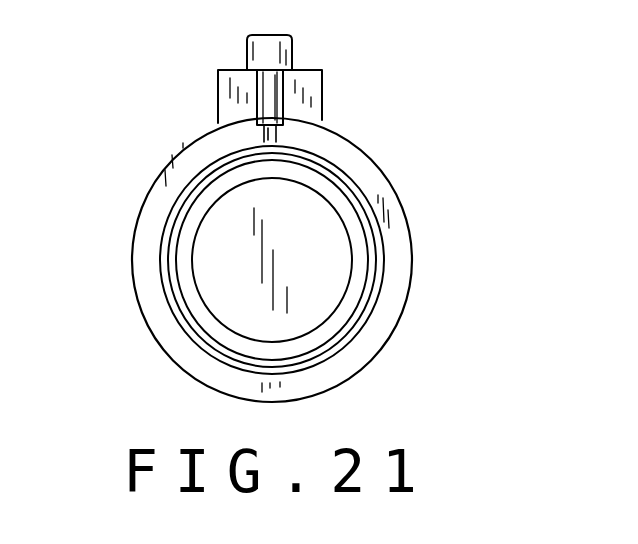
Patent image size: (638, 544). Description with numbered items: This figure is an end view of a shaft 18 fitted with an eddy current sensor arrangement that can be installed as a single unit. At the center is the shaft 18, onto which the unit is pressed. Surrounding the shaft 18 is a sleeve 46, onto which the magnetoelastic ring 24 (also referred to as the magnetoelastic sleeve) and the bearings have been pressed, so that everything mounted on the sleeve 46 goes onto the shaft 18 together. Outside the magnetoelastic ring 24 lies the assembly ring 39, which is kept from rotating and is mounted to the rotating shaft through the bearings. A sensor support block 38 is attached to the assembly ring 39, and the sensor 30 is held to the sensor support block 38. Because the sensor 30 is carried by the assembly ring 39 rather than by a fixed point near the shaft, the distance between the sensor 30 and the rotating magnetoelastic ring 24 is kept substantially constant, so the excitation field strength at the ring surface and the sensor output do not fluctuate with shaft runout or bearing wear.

The shaft 18 is at (238, 280).
The magnetoelastic ring 24 is at (365, 200).
The sensor 30 is at (292, 45).
The sensor support block 38 is at (232, 70).
The assembly ring 39 is at (408, 294).
The sleeve 46 is at (368, 248).